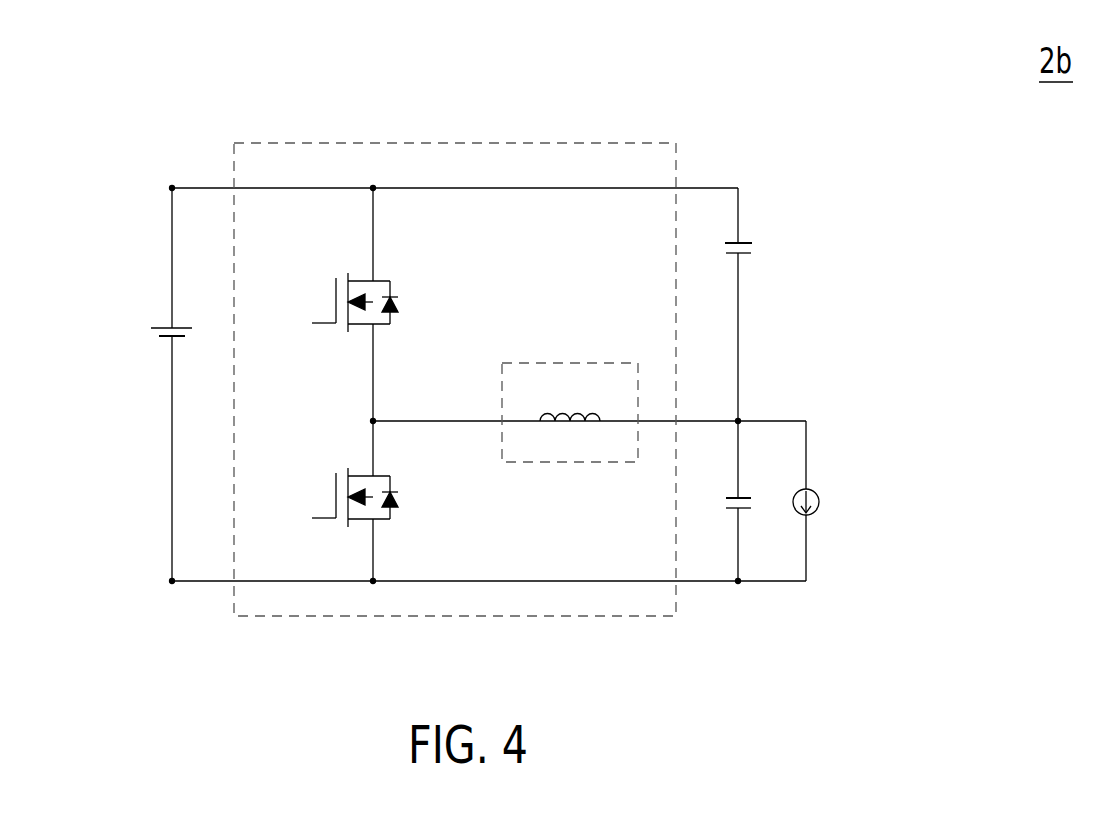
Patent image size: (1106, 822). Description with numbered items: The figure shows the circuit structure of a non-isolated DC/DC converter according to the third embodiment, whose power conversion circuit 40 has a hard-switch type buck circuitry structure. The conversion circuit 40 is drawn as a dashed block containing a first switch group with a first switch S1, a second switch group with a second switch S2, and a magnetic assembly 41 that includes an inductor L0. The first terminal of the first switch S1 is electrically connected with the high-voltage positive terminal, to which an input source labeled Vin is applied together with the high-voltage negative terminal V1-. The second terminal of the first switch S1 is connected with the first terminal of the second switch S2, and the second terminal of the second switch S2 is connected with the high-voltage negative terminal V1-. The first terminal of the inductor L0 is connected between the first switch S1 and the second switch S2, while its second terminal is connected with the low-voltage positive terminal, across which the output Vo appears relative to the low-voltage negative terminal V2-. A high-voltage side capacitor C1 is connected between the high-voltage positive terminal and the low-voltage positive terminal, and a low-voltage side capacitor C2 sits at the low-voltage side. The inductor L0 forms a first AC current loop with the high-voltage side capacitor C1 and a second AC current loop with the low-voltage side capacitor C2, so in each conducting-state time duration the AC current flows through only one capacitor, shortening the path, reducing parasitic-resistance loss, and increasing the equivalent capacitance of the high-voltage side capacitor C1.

The power conversion circuit 40 is at (490, 143).
The magnetic assembly 41 is at (553, 363).
The first switch S1 is at (350, 318).
The second switch S2 is at (352, 512).
The inductor L0 is at (570, 404).
The high-voltage side capacitor C1 is at (749, 304).
The low-voltage side capacitor C2 is at (751, 501).
The input voltage source Vin is at (152, 326).
The output voltage Vo is at (825, 501).
The high-voltage negative terminal V1- is at (172, 581).
The second negative terminal V2- is at (738, 581).